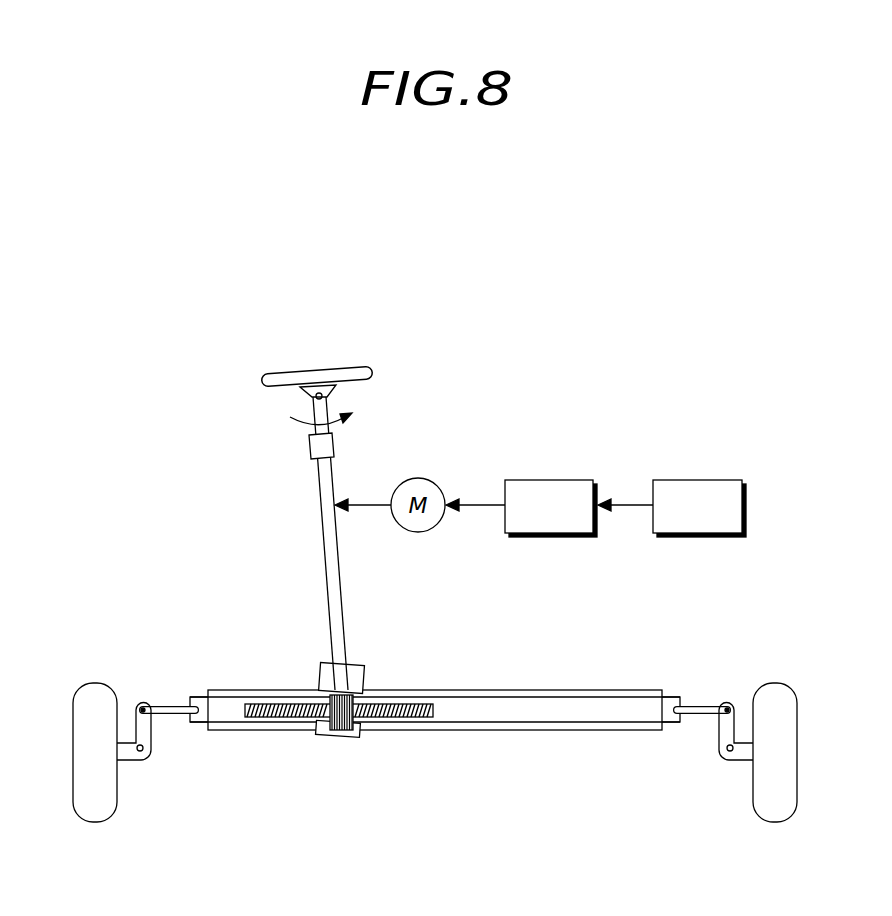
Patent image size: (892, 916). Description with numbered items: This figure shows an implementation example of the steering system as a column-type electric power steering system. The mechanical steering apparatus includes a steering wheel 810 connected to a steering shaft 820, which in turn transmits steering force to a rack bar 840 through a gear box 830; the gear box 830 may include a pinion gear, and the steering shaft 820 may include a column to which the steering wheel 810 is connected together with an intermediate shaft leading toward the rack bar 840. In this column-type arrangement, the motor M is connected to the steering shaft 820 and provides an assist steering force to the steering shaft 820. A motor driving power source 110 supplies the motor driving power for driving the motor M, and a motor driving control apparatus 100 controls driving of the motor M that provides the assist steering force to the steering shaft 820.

The steering wheel 810 is at (358, 363).
The steering shaft 820 is at (330, 574).
The gear box 830 is at (340, 737).
The rack bar 840 is at (575, 715).
The motor driving control apparatus 100 is at (568, 517).
The motor driving power source 110 is at (715, 517).